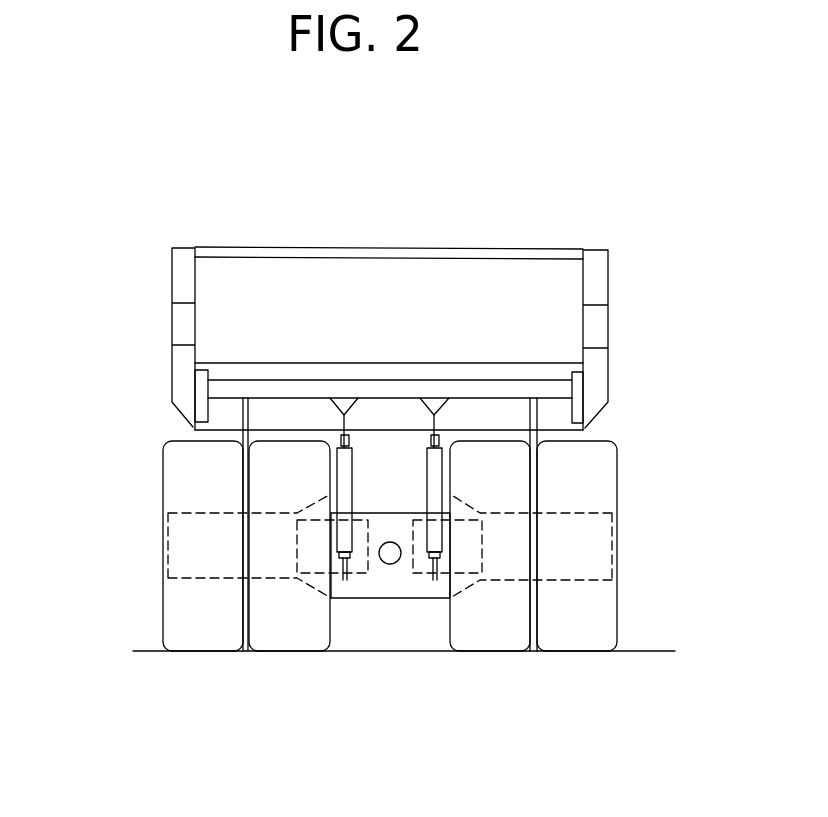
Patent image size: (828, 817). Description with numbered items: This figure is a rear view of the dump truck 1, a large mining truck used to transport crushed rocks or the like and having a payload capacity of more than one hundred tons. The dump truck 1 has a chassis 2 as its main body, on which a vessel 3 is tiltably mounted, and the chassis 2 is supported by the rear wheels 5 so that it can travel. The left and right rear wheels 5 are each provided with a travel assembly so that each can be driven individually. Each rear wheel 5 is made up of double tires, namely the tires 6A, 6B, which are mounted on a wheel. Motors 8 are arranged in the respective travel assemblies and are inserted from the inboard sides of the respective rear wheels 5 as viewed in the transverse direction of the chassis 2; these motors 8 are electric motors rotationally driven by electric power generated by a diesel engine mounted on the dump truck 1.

The dump truck 1 is at (166, 245).
The chassis 2 is at (392, 448).
The vessel 3 is at (400, 277).
The rear wheels 5 is at (162, 465).
The tire 6A is at (202, 648).
The tire 6B is at (272, 647).
The motors 8 is at (322, 577).